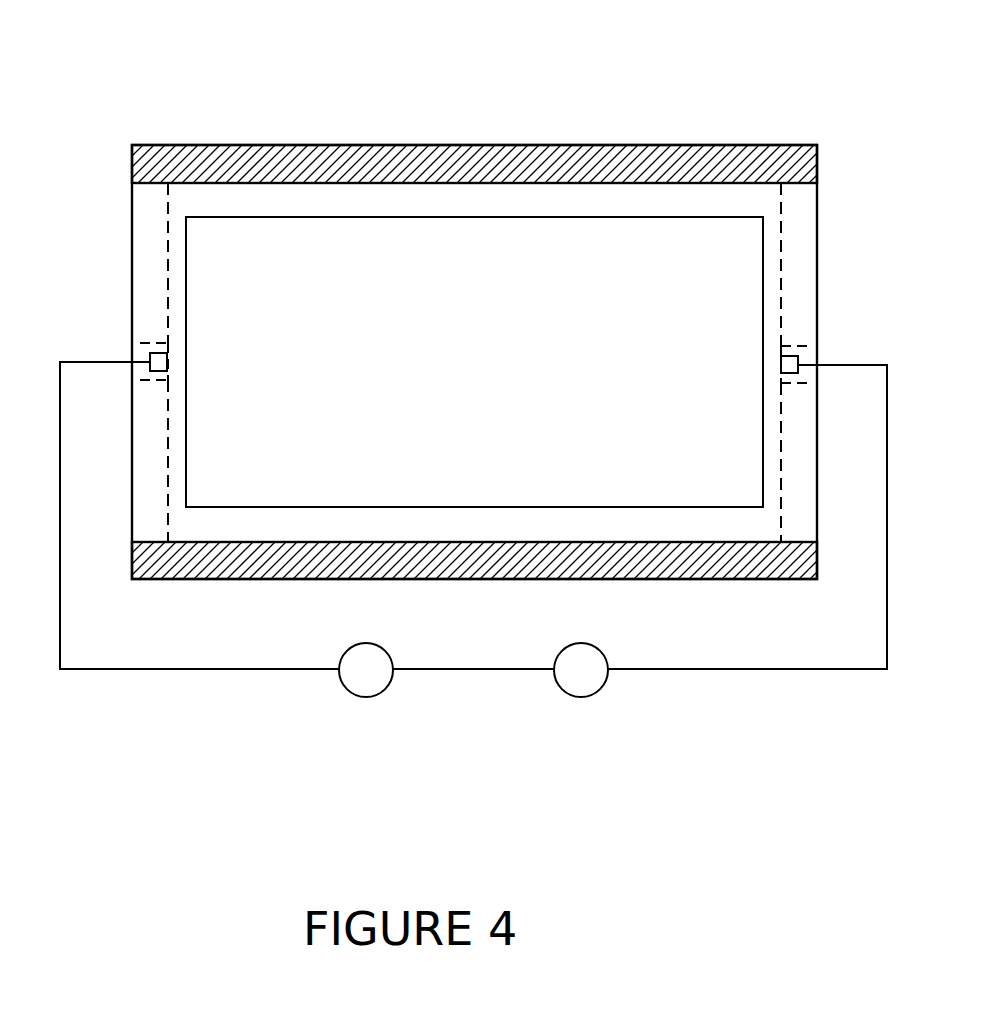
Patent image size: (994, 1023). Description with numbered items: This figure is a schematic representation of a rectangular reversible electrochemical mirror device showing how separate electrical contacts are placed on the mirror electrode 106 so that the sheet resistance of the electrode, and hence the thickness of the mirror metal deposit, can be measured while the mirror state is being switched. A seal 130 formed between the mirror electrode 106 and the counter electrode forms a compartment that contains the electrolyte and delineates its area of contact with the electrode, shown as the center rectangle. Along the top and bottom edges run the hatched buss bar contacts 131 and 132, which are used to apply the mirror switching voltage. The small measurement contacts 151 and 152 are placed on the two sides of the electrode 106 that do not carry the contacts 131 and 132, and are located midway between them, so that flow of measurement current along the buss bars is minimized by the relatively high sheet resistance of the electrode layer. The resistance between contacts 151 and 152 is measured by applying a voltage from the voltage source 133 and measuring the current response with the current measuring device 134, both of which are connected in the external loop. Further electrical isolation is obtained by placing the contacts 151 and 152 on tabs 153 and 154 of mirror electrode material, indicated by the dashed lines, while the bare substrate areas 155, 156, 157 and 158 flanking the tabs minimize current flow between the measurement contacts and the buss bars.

The mirror electrode 106 is at (440, 253).
The seal 130 is at (633, 205).
The contact (buss bar) 131 is at (805, 572).
The contact (buss bar) 132 is at (777, 160).
The voltage source 133 is at (346, 685).
The current measuring device 134 is at (600, 688).
The electrical contact 151 is at (150, 365).
The electrical contact 152 is at (798, 368).
The tab 153 is at (140, 350).
The tab 154 is at (810, 355).
The bare substrate area 155 is at (152, 257).
The bare substrate area 156 is at (802, 261).
The bare substrate area 157 is at (148, 532).
The bare substrate area 158 is at (802, 489).